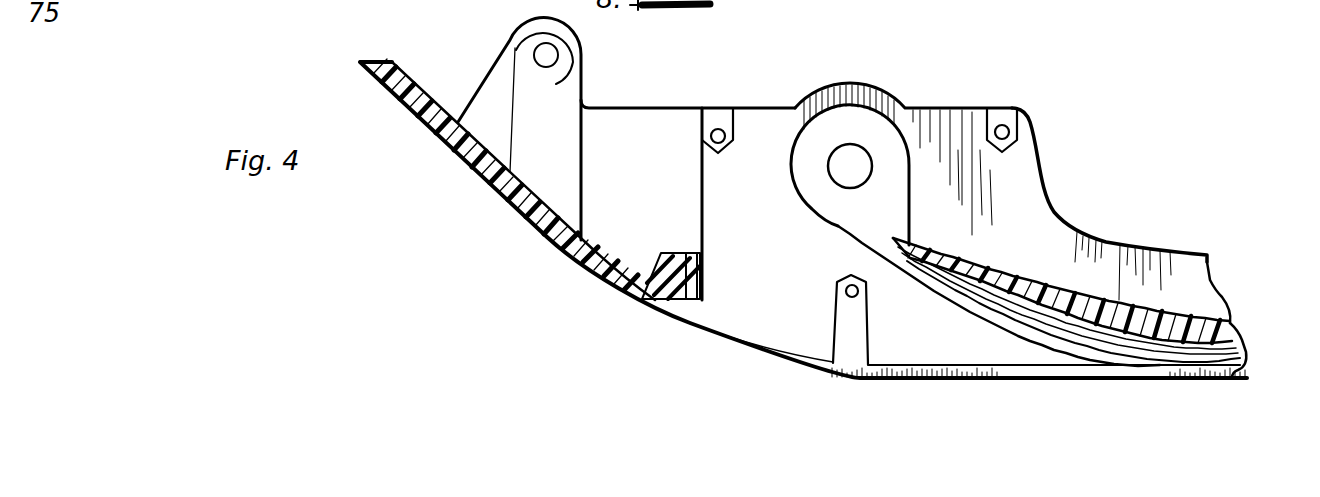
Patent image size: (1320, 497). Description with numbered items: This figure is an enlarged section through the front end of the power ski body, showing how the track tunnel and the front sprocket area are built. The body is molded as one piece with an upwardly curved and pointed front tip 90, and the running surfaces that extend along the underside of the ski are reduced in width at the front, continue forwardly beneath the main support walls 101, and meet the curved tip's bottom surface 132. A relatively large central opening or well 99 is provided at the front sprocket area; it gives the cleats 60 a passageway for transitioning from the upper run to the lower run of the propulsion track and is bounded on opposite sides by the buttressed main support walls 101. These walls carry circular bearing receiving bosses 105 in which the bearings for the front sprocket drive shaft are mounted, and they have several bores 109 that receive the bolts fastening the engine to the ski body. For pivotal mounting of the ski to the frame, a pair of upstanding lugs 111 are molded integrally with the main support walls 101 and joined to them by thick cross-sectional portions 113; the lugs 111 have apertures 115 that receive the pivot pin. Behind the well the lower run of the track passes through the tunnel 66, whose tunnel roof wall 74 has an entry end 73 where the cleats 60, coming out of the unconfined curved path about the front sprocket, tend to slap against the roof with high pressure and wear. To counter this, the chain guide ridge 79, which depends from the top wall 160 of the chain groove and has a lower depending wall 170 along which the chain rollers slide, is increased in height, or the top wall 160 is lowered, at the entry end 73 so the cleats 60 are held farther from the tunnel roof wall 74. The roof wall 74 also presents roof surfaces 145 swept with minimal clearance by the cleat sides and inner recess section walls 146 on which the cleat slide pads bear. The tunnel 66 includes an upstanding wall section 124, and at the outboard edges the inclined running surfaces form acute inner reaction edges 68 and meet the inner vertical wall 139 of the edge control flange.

The cleats 60 is at (869, 1).
The tunnel 66 is at (1024, 352).
The inner reaction edges 68 is at (1135, 365).
The entry end 73 is at (980, 340).
The tunnel roof wall 74 is at (1160, 372).
The chain guide ridge 79 is at (961, 246).
The front tip 90 is at (372, 70).
The central opening or well 99 is at (771, 146).
The main support walls 101 is at (772, 240).
The bearing receiving bosses 105 is at (882, 102).
The bores 109 is at (718, 130).
The upstanding lugs 111 is at (597, 46).
The thick cross-sectional portions 113 is at (622, 133).
The apertures 115 is at (533, 50).
The upstanding wall section 124 is at (1200, 308).
The curved tip's bottom surface 132 is at (617, 290).
The inner vertical wall 139 is at (1225, 380).
The roof surfaces 145 is at (1077, 338).
The inner recess section walls 146 is at (1250, 364).
The top wall 160 is at (1052, 300).
The lower depending wall 170 is at (1106, 318).